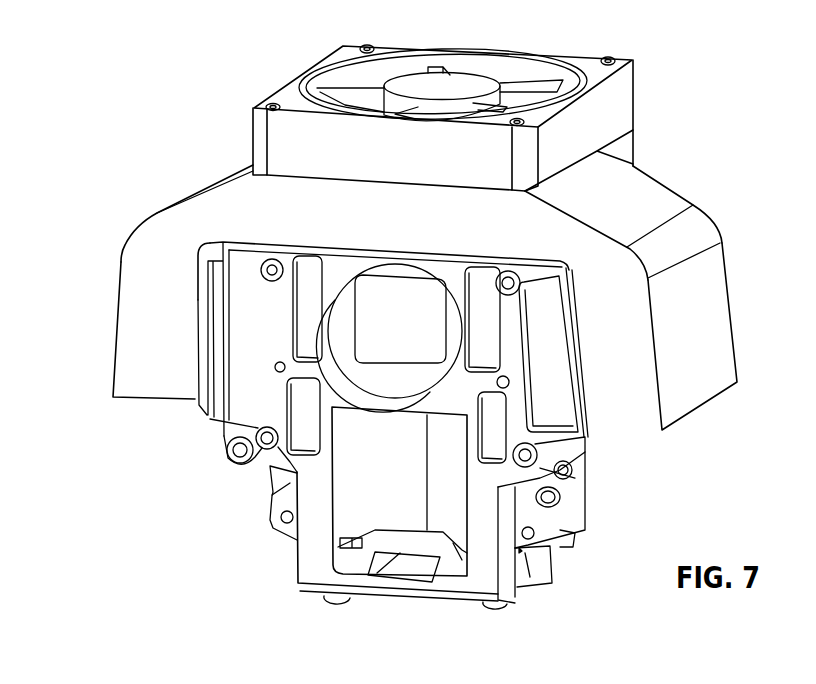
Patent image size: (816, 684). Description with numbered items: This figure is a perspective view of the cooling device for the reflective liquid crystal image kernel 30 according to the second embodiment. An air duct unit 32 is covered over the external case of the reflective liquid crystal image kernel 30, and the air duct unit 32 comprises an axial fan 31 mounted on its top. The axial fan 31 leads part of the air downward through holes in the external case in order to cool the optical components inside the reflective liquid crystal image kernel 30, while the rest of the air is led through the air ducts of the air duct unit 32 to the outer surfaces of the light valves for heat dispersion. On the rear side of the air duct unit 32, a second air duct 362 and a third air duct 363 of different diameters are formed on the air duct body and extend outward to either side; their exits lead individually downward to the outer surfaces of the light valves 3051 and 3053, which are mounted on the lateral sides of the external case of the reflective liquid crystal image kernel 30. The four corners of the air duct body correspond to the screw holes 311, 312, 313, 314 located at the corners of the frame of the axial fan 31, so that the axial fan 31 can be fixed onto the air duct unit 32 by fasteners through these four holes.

The reflective liquid crystal image kernel 30 is at (253, 540).
The axial fan 31 is at (618, 95).
The screw hole 311 is at (623, 60).
The screw hole 312 is at (350, 49).
The screw hole 313 is at (262, 104).
The screw hole 314 is at (500, 127).
The air duct unit 32 is at (235, 203).
The second air duct 362 is at (717, 307).
The third air duct 363 is at (130, 285).
The light valve 3051 is at (200, 390).
The light valve 3053 is at (582, 425).